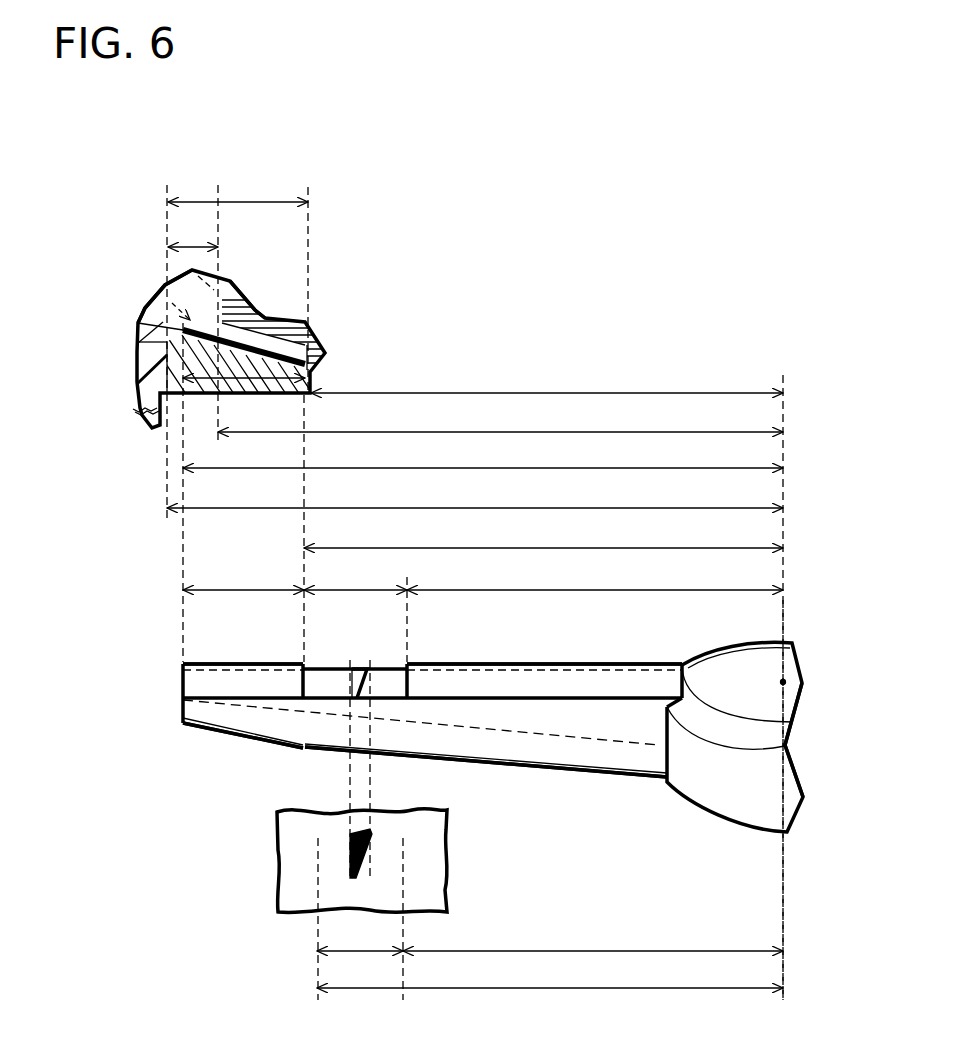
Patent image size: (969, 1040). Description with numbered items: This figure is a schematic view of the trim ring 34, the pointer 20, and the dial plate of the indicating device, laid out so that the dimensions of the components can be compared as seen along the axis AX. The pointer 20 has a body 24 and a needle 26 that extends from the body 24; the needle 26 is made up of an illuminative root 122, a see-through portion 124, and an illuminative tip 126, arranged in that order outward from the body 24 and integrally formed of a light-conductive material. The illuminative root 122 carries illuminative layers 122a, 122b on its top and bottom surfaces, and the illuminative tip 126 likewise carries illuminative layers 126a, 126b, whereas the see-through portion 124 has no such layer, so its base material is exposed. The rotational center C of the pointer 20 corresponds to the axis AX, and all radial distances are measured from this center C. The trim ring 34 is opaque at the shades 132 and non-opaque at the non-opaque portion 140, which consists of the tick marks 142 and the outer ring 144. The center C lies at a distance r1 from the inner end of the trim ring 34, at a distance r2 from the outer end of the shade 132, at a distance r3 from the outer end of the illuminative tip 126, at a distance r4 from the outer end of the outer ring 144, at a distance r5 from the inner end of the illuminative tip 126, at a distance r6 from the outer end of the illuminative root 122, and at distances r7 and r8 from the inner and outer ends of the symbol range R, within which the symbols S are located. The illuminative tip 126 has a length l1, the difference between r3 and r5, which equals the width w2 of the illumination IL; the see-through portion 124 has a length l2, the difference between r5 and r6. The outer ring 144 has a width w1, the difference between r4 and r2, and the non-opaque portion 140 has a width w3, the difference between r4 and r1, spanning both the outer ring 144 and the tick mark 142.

The non-opaque portion 140 is at (237, 155).
The trim ring 34 is at (192, 320).
The tick mark 142 is at (167, 278).
The outer ring 144 is at (225, 295).
The shade 132 is at (243, 327).
The illumination IL is at (273, 343).
The width of the outer ring w1 is at (193, 228).
The width of the illumination w2 is at (244, 365).
The width of the non-opaque portion w3 is at (238, 182).
The distance to inner end of the trim ring r1 is at (547, 377).
The distance to outer end of the shade r2 is at (500, 415).
The distance to outer end of the illuminative tip r3 is at (483, 452).
The distance to outer end of the outer ring r4 is at (475, 492).
The distance to inner end of the illuminative tip r5 is at (543, 532).
The distance to outer end of the illuminative root r6 is at (595, 574).
The distance to inner end of the symbol range r7 is at (593, 935).
The distance to outer end of the symbol range r8 is at (550, 972).
The length of the illuminative tip l1 is at (243, 574).
The length of the see-through portion l2 is at (355, 574).
The symbol range R is at (360, 934).
The needle 26 is at (165, 683).
The illuminative tip 126 is at (240, 746).
The illuminative layer 126a is at (248, 680).
The illuminative layer 126b is at (248, 732).
The see-through portion 124 is at (381, 760).
The illuminative root 122 is at (549, 777).
The illuminative layer 122a is at (528, 678).
The illuminative layer 122b is at (532, 752).
The symbol S is at (340, 858).
The pointer 20 is at (846, 640).
The rotational center C is at (786, 682).
The body 24 is at (807, 761).
The axis AX is at (787, 863).